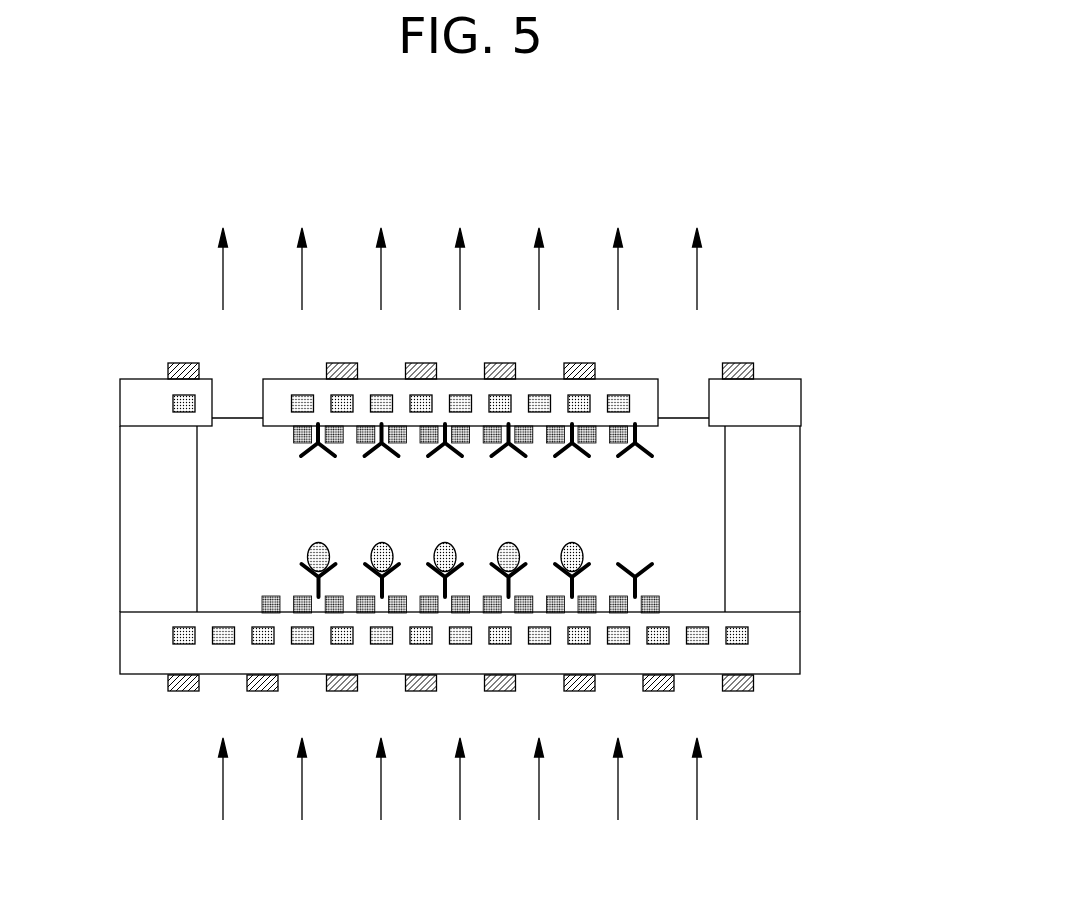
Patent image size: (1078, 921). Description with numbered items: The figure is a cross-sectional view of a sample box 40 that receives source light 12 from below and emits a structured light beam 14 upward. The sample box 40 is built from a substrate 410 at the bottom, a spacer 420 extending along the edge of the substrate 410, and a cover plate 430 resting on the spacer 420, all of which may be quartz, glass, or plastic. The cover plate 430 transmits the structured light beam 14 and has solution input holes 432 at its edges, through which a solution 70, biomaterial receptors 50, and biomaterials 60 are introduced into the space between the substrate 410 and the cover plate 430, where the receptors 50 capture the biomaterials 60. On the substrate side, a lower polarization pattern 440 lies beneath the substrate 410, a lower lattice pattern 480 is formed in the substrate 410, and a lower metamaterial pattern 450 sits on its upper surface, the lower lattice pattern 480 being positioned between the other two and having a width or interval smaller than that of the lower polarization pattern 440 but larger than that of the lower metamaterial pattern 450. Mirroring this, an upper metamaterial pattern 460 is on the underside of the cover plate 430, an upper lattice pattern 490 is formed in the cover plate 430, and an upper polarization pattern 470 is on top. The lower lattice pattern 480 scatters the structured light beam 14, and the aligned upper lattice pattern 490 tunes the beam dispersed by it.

The source light 12 is at (698, 778).
The structured light beam 14 is at (698, 268).
The sample box 40 is at (493, 506).
The biomaterial receptor 50 is at (315, 588).
The biomaterial 60 is at (304, 557).
The solution 70 is at (213, 527).
The substrate 410 is at (792, 657).
The spacer 420 is at (792, 521).
The cover plate 430 is at (792, 396).
The solution input hole 432 is at (238, 389).
The lower polarization pattern 440 is at (752, 682).
The lower metamaterial pattern 450 is at (660, 600).
The upper metamaterial pattern 460 is at (629, 435).
The upper polarization pattern 470 is at (753, 366).
The lower lattice pattern 480 is at (746, 635).
The upper lattice pattern 490 is at (628, 402).